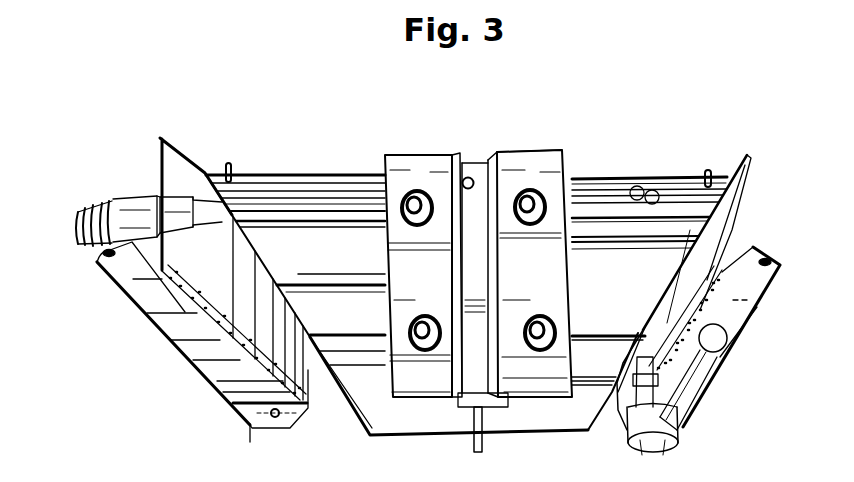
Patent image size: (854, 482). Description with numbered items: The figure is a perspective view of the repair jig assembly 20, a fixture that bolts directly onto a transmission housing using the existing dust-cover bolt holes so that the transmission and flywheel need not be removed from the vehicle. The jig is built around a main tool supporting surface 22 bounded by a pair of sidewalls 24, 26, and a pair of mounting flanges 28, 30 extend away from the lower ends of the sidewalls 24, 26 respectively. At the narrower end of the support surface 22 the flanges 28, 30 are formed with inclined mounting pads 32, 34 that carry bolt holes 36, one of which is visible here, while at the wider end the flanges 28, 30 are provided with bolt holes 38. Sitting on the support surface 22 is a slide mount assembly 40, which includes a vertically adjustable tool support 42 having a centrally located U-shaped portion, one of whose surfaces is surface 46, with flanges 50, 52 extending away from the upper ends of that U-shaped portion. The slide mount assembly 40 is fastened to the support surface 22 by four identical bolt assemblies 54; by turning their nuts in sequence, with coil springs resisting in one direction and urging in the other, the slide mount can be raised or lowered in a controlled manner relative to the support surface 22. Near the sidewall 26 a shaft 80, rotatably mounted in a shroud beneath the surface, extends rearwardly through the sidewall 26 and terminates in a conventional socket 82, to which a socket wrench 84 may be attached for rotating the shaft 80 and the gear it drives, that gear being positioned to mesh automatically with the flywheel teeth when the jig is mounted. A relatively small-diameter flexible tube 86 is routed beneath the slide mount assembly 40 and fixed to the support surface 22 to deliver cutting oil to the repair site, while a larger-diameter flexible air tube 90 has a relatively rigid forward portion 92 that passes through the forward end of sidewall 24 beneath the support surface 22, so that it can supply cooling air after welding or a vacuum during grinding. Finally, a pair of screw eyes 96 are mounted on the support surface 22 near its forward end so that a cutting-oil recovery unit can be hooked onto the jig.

The repair jig assembly 20 is at (654, 146).
The main tool supporting surface 22 is at (466, 304).
The sidewall 24 is at (178, 166).
The sidewall 26 is at (733, 213).
The mounting flange 28 is at (173, 333).
The mounting flange 30 is at (758, 304).
The inclined mounting pad 32 is at (249, 446).
The inclined mounting pad 34 is at (614, 420).
The bolt hole 36 is at (297, 412).
The bolt hole 38 is at (100, 255).
The slide mount assembly 40 is at (472, 145).
The vertically adjustable tool support 42 is at (572, 172).
The surface 46 is at (466, 262).
The flange 50 is at (562, 290).
The flange 52 is at (404, 305).
The bolt assembly 54 is at (398, 207).
The shaft 80 is at (645, 331).
The socket 82 is at (628, 367).
The socket wrench 84 is at (683, 442).
The flexible tube 86 is at (485, 443).
The flexible air tube 90 is at (90, 204).
The rigid forward portion 92 is at (209, 228).
The screw eye 96 is at (235, 168).